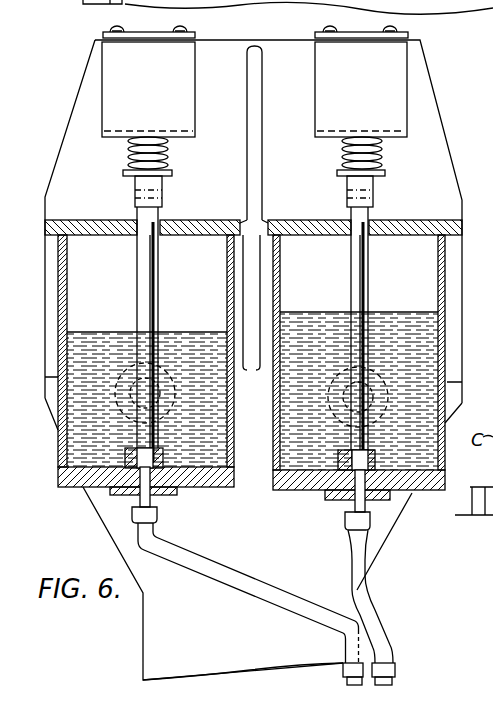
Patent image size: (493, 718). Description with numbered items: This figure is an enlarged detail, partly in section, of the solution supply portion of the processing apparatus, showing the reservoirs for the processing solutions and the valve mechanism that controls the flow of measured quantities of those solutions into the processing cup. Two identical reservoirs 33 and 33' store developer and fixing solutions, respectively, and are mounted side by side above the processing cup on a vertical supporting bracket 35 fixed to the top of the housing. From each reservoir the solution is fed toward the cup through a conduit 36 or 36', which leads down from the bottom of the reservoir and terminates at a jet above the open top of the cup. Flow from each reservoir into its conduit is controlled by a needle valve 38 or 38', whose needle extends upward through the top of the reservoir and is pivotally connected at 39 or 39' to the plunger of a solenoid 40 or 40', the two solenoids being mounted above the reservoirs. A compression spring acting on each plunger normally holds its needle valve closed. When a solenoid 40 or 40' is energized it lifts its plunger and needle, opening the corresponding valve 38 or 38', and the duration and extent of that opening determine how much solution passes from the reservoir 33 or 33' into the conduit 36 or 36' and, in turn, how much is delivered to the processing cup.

The supporting bracket 35 is at (437, 160).
The solenoid 40 is at (148, 97).
The solenoid 40' is at (361, 97).
The pivotal connection 39 is at (160, 319).
The pivotal connection 39' is at (347, 320).
The reservoir 33 is at (146, 371).
The reservoir 33' is at (359, 373).
The needle valve 38 is at (170, 507).
The needle valve 38' is at (331, 515).
The conduit 36 is at (250, 604).
The conduit 36' is at (351, 607).